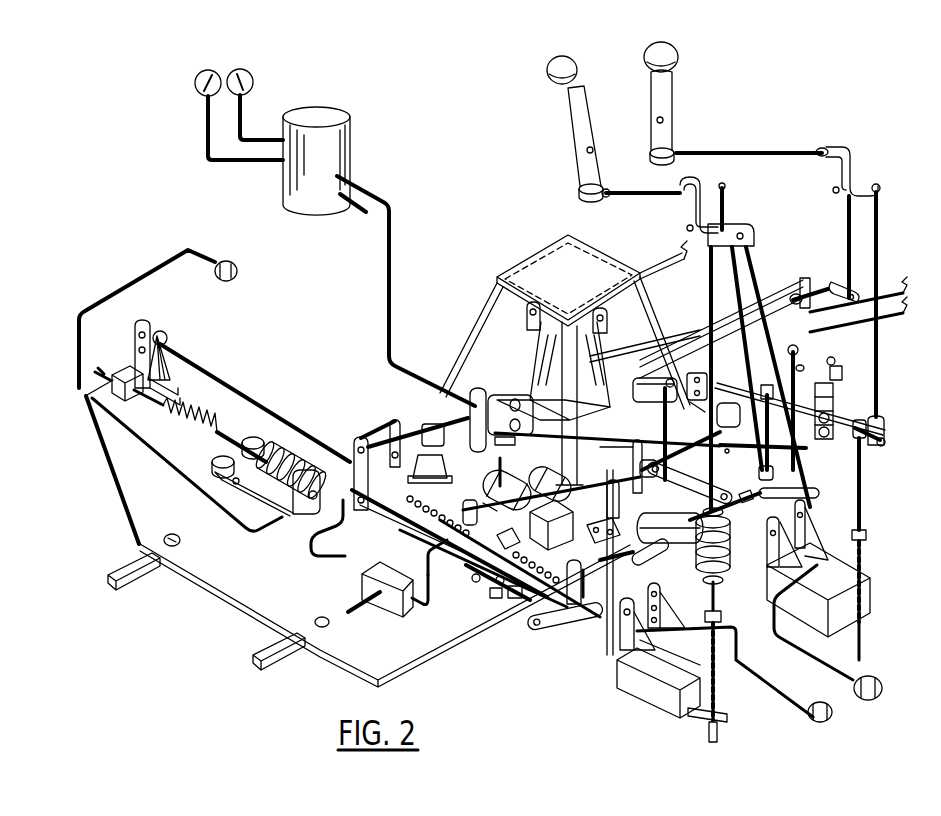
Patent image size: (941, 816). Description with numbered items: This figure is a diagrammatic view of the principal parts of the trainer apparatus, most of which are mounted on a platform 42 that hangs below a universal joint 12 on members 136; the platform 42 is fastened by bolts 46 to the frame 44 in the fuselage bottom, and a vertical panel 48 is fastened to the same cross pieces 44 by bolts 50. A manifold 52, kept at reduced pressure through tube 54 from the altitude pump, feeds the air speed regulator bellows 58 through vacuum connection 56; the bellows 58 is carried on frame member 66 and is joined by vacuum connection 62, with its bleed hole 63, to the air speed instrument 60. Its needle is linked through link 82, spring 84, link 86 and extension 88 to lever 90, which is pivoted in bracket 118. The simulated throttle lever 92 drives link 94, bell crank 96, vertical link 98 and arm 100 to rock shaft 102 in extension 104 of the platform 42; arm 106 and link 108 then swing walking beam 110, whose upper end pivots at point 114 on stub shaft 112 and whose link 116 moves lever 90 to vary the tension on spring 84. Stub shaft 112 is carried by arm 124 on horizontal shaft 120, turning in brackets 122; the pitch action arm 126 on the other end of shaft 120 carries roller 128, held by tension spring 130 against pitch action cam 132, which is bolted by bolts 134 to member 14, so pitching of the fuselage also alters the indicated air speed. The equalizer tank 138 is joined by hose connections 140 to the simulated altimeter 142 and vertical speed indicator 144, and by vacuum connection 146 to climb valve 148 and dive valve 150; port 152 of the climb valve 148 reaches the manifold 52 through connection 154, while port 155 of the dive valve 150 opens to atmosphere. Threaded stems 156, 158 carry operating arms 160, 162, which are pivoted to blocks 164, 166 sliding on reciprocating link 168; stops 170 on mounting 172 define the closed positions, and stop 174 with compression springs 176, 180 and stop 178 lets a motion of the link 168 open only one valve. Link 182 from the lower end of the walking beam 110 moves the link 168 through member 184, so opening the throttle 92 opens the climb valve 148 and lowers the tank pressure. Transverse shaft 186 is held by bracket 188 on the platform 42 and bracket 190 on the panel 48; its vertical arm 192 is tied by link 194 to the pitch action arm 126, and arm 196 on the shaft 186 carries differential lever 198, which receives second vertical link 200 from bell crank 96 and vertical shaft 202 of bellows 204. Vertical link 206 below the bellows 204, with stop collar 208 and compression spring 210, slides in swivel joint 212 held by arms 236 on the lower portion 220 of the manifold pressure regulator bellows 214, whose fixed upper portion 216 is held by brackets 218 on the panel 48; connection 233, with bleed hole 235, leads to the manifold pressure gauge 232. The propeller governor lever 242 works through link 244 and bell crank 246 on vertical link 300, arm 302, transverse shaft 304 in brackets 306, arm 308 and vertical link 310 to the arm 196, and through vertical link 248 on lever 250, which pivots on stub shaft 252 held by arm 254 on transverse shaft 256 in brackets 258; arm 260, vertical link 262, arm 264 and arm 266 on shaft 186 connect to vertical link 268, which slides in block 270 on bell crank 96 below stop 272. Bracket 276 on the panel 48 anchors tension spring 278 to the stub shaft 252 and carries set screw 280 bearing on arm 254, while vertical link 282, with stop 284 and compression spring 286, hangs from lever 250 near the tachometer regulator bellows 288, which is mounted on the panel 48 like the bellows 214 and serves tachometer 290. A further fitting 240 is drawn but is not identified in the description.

The universal joint 12 is at (553, 272).
The member 14 is at (550, 360).
The platform 42 is at (116, 467).
The frame 44 is at (268, 652).
The bolts 46 is at (180, 546).
The panel 48 is at (790, 296).
The bolts 50 is at (803, 362).
The manifold 52 is at (392, 605).
The tube 54 is at (360, 612).
The vacuum connection 56 is at (314, 548).
The air speed regulator bellows 58 is at (295, 440).
The air speed instrument 60 is at (232, 260).
The vacuum connection 62 is at (75, 336).
The bleed hole 63 is at (180, 470).
The frame member 66 is at (266, 495).
The link 82 is at (228, 436).
The spring 84 is at (197, 420).
The link 86 is at (150, 401).
The extension 88 is at (125, 370).
The lever 90 is at (145, 320).
The simulated throttle control lever 92 is at (566, 102).
The link 94 is at (630, 191).
The bell crank 96 is at (678, 212).
The vertical link 98 is at (760, 272).
The arm 100 is at (814, 491).
The shaft 102 is at (752, 494).
The extension 104 is at (660, 563).
The arm 106 is at (582, 627).
The link 108 is at (545, 600).
The walking beam 110 is at (322, 496).
The horizontal stub shaft 112 is at (378, 432).
The point 114 is at (356, 445).
The link 116 is at (271, 418).
The bracket 118 is at (172, 360).
The horizontal shaft 120 is at (440, 428).
The brackets 122 is at (436, 450).
The arm 124 is at (400, 428).
The pitch action arm 126 is at (470, 400).
The roller 128 is at (525, 420).
The tension spring 130 is at (500, 432).
The pitch action cam 132 is at (512, 425).
The bolts 134 is at (535, 415).
The members 136 is at (490, 300).
The equalizer tank 138 is at (348, 145).
The hose connections 140 is at (210, 145).
The simulated altimeter 142 is at (199, 77).
The simulated vertical speed indicator 144 is at (250, 76).
The vacuum connection 146 is at (391, 251).
The climb valve 148 is at (600, 538).
The dive valve 150 is at (500, 480).
The second port 152 is at (560, 498).
The connection 154 is at (428, 612).
The second port 155 is at (497, 464).
The threaded stem 156 is at (542, 535).
The threaded stem 158 is at (495, 502).
The operating arm 160 is at (522, 548).
The operating arm 162 is at (463, 508).
The block 164 is at (472, 580).
The block 166 is at (432, 540).
The reciprocating link 168 is at (515, 596).
The stops 170 is at (427, 560).
The mounting 172 is at (492, 594).
The stop 174 is at (470, 566).
The compression spring 176 is at (410, 526).
The stop 178 is at (407, 496).
The compression spring 180 is at (497, 584).
The link 182 is at (376, 514).
The member 184 is at (568, 608).
The transverse shaft 186 is at (693, 447).
The bracket 188 is at (696, 534).
The bracket 190 is at (695, 372).
The vertical arm 192 is at (640, 445).
The link 194 is at (648, 380).
The arm 196 is at (652, 479).
The differential lever 198 is at (683, 486).
The second vertical link 200 is at (708, 262).
The vertical shaft 202 is at (692, 521).
The bellows 204 is at (731, 538).
The vertical link 206 is at (710, 606).
The stop collar 208 is at (722, 616).
The compression spring 210 is at (720, 640).
The swivel joint 212 is at (716, 738).
The manifold pressure regulator bellows 214 is at (612, 662).
The fixed upper portion 216 is at (650, 672).
The brackets 218 is at (648, 612).
The lower portion 220 is at (648, 705).
The manifold pressure gauge 232 is at (830, 715).
The connection 233 is at (790, 700).
The bleed hole 235 is at (768, 682).
The arms 236 is at (695, 718).
The pipe 240 is at (360, 216).
The propeller governor control lever 242 is at (668, 112).
The link 244 is at (740, 151).
The bell crank 246 is at (846, 150).
The vertical link 248 is at (860, 290).
The lever 250 is at (872, 423).
The stub shaft 252 is at (838, 362).
The arm 254 is at (770, 383).
The transverse shaft 256 is at (722, 345).
The brackets 258 is at (685, 376).
The arm 260 is at (843, 372).
The vertical link 262 is at (810, 447).
The arm 264 is at (777, 471).
The arm 266 is at (884, 438).
The vertical link 268 is at (730, 300).
The block 270 is at (751, 229).
The stop 272 is at (727, 196).
The bracket 276 is at (834, 425).
The tension spring 278 is at (836, 408).
The vertical set screw 280 is at (838, 392).
The vertical link 282 is at (862, 506).
The stop 284 is at (867, 533).
The compression spring 286 is at (864, 556).
The tachometer regulator bellows 288 is at (866, 588).
The tachometer 290 is at (883, 690).
The vertical link 300 is at (846, 218).
The arm 302 is at (879, 262).
The transverse shaft 304 is at (812, 286).
The brackets 306 is at (870, 300).
The arm 308 is at (666, 380).
The vertical link 310 is at (663, 412).